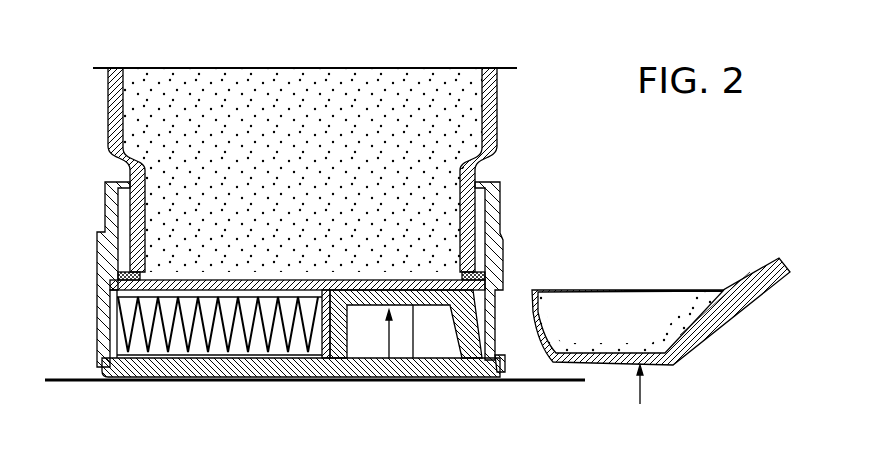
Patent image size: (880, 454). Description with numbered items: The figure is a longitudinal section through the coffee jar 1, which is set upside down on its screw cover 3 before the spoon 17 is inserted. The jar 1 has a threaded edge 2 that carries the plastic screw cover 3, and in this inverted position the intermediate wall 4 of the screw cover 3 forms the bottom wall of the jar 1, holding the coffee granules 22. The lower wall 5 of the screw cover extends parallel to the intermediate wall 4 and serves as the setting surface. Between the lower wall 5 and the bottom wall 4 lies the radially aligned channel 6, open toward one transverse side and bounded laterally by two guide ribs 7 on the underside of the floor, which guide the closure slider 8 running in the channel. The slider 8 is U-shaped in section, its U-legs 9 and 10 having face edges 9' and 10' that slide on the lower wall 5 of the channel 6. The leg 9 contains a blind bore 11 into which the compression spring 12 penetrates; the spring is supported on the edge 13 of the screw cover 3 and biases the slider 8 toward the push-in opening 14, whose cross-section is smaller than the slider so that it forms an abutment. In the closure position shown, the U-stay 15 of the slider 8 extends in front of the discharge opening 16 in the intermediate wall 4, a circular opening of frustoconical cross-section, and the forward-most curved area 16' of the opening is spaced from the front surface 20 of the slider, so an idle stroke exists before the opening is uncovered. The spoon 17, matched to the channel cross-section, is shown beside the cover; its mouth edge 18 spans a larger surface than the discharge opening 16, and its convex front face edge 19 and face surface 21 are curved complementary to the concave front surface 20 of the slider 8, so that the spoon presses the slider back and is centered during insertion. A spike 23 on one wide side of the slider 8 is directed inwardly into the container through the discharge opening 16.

The coffee jar 1 is at (497, 95).
The edge 2 is at (477, 224).
The screw cover 3 is at (499, 188).
The intermediate wall 4 is at (157, 283).
The lower wall 5 is at (185, 370).
The radially aligned channel 6 is at (262, 345).
The guide ribs 7 is at (145, 346).
The closure slider 8 is at (389, 358).
The U-leg 9 is at (406, 361).
The face edge 9' is at (332, 361).
The U-leg 10 is at (457, 369).
The face edge 10' is at (477, 391).
The blind bore 11 is at (322, 349).
The compression spring 12 is at (228, 282).
The edge 13 is at (102, 343).
The push-in opening 14 is at (496, 350).
The U-stay 15 is at (413, 346).
The discharge opening 16 is at (358, 242).
The forward-most curved area 16' is at (507, 266).
The spoon 17 is at (642, 399).
The mouth edge 18 is at (673, 290).
The front face edge 19 is at (542, 313).
The front surface 20 is at (505, 294).
The face surface 21 is at (535, 290).
The coffee granules 22 is at (358, 110).
The spike 23 is at (673, 364).